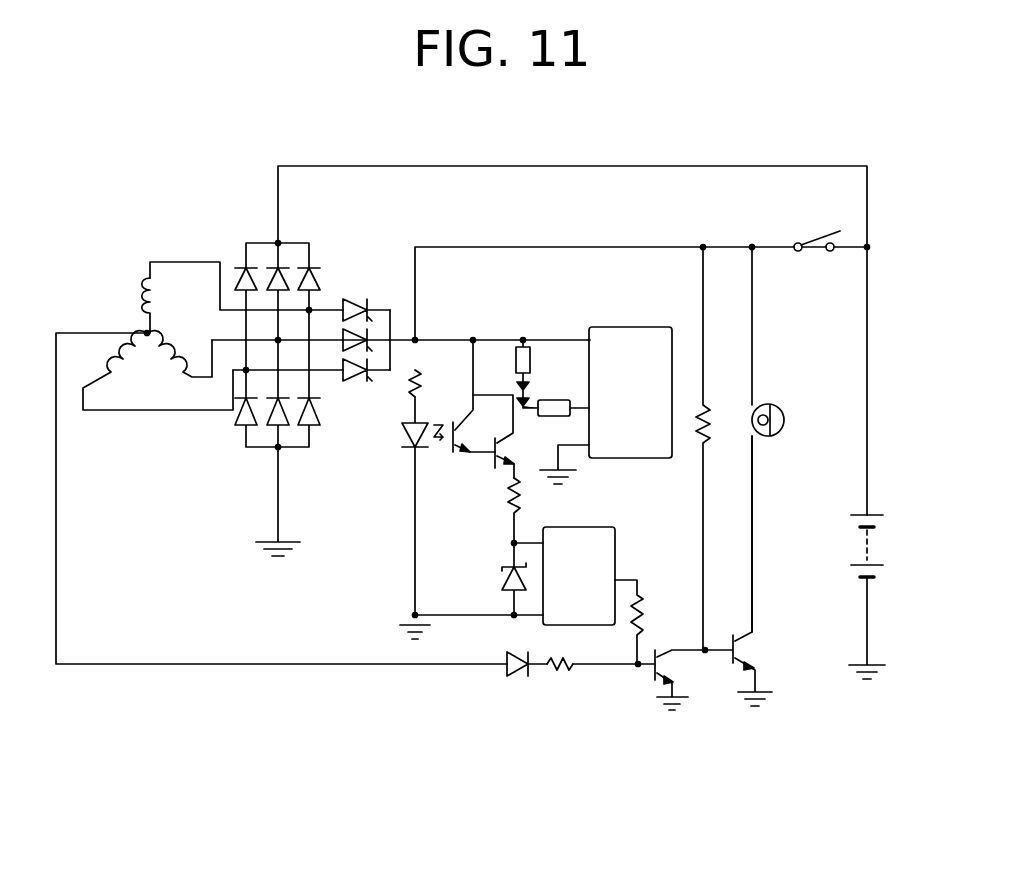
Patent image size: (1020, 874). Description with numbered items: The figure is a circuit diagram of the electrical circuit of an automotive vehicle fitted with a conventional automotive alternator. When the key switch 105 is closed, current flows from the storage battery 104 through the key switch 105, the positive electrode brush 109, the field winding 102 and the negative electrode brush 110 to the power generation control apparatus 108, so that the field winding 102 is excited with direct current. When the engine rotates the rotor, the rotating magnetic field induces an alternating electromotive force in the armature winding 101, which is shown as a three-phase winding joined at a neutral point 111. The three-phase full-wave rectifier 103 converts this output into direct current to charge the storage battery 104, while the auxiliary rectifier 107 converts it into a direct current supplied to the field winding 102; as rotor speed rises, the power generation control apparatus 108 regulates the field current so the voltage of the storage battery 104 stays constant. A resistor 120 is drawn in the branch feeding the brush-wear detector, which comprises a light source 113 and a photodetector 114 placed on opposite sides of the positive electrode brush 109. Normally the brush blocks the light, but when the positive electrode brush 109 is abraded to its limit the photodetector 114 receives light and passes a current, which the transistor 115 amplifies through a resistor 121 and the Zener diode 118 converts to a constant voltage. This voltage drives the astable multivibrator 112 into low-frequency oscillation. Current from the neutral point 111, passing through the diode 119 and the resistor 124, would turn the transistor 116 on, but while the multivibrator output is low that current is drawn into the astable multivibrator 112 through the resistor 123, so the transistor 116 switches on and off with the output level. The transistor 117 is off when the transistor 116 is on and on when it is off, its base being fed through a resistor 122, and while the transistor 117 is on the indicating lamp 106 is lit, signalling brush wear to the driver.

The armature winding 101 is at (136, 302).
The neutral point 111 is at (151, 342).
The three-phase full-wave rectifier 103 is at (227, 425).
The auxiliary rectifier 107 is at (359, 290).
The resistor 120 is at (400, 385).
The light source 113 is at (400, 438).
The photodetector 114 is at (453, 460).
The transistor 115 is at (488, 477).
The resistor 121 is at (528, 498).
The Zener diode 118 is at (500, 577).
The astable multivibrator 112 is at (625, 540).
The resistor 123 is at (655, 610).
The diode 119 is at (500, 676).
The resistor 124 is at (554, 676).
The transistor 116 is at (650, 678).
The transistor 117 is at (760, 650).
The resistor 122 is at (717, 400).
The indicating lamp 106 is at (781, 436).
The key switch 105 is at (814, 256).
The storage battery 104 is at (848, 545).
The power generation control apparatus 108 is at (650, 318).
The positive electrode brush 109 is at (508, 348).
The field winding 102 is at (530, 385).
The negative electrode brush 110 is at (567, 397).